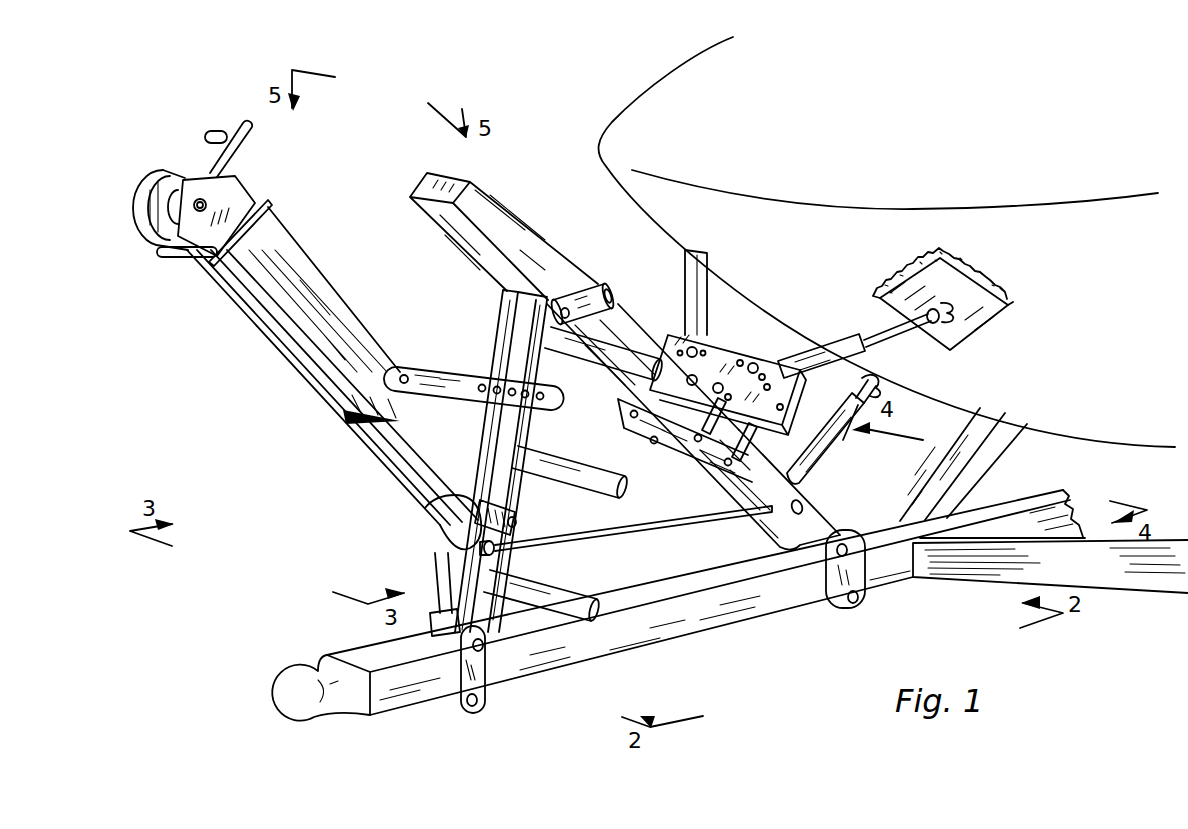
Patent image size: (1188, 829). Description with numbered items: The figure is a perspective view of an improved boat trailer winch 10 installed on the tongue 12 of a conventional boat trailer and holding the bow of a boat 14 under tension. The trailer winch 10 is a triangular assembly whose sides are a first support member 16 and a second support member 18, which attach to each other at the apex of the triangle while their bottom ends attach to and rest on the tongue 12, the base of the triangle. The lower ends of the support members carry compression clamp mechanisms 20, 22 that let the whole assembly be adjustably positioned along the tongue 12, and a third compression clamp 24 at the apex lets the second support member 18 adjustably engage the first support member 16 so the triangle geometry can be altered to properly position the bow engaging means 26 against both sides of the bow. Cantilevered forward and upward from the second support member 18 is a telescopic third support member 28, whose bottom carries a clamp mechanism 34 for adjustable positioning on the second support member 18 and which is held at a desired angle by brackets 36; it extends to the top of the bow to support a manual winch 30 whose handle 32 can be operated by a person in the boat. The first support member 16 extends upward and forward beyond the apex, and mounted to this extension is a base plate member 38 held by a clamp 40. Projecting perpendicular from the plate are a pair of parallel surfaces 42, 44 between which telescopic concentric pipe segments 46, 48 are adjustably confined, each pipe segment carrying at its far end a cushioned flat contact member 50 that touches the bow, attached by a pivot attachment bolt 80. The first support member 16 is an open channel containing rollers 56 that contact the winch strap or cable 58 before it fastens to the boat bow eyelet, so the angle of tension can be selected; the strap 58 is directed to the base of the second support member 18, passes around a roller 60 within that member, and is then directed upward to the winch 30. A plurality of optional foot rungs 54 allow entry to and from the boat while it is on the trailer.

The boat trailer winch 10 is at (282, 424).
The tongue 12 is at (350, 648).
The boat 14 is at (668, 82).
The first support member 16 is at (620, 350).
The second support member 18 is at (500, 343).
The compression clamp mechanism 20 is at (847, 607).
The compression clamp mechanism 22 is at (483, 685).
The third compression clamp 24 is at (593, 288).
The bow engaging means 26 is at (770, 303).
The third support member 28 is at (310, 318).
The manual winch 30 is at (170, 170).
The handle 32 is at (215, 134).
The clamp mechanism 34 is at (440, 497).
The brackets 36 is at (427, 372).
The base plate member 38 is at (813, 475).
The clamp 40 is at (643, 427).
The parallel surface 42 is at (713, 352).
The parallel surface 44 is at (810, 442).
The telescopic concentric pipe segment 46 is at (833, 340).
The telescopic concentric pipe segment 48 is at (698, 275).
The cushioned flat contact member 50 is at (1000, 280).
The foot rungs 54 is at (572, 358).
The rollers 56 is at (725, 491).
The winch strap or cable 58 is at (358, 450).
The roller 60 is at (510, 547).
The pivot attachment bolt 80 is at (885, 285).